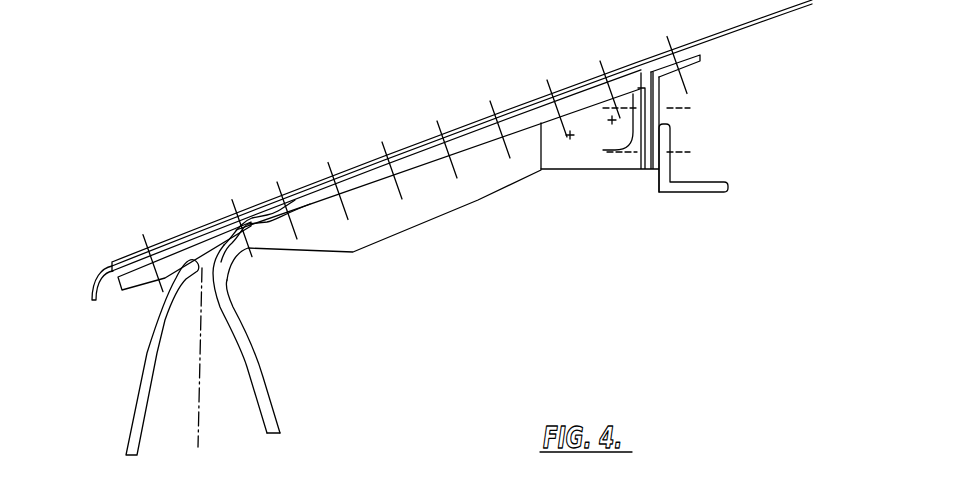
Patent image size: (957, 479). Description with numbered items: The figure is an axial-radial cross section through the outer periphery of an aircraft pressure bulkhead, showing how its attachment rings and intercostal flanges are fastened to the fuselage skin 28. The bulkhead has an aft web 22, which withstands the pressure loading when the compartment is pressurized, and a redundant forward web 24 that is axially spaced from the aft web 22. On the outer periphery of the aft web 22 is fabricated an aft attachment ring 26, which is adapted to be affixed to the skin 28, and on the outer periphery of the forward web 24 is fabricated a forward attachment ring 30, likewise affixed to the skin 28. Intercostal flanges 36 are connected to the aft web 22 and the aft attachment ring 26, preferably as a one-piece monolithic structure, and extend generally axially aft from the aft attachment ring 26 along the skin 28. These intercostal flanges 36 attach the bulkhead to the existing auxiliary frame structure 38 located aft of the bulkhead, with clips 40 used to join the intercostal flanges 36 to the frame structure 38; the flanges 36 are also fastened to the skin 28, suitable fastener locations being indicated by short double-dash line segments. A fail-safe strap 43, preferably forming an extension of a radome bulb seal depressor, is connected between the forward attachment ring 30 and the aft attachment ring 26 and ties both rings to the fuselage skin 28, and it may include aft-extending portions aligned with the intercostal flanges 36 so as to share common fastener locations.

The aft web 22 is at (263, 377).
The forward web 24 is at (143, 375).
The aft attachment ring 26 is at (247, 218).
The fuselage skin 28 is at (354, 154).
The forward attachment ring 30 is at (137, 288).
The intercostal flanges 36 is at (440, 195).
The auxiliary frame structure 38 is at (679, 203).
The clips 40 is at (622, 153).
The fail-safe strap 43 is at (100, 277).